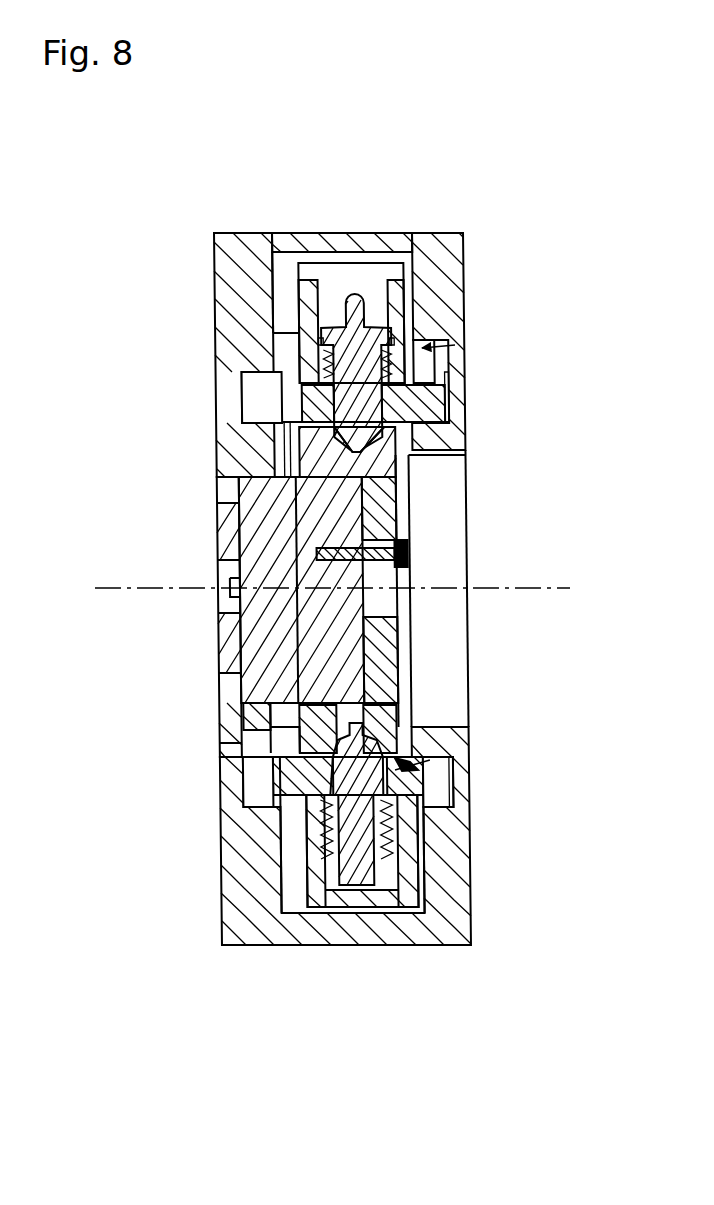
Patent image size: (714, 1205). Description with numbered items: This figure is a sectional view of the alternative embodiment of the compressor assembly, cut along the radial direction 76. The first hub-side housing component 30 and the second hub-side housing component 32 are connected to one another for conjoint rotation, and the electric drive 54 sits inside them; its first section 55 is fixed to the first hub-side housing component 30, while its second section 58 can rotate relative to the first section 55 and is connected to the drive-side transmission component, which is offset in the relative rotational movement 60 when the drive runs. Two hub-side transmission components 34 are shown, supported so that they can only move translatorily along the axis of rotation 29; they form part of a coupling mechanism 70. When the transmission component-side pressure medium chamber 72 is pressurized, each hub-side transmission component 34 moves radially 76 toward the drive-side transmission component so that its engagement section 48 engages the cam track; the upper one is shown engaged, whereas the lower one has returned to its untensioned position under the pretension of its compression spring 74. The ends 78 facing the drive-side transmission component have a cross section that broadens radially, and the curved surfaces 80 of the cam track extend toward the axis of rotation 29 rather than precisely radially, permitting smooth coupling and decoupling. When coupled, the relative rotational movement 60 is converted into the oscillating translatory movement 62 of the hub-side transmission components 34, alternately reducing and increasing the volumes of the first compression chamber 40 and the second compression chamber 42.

The axis of rotation 29 is at (500, 588).
The first hub-side housing component 30 is at (213, 330).
The second hub-side housing component 32 is at (452, 303).
The hub-side transmission component 34 is at (363, 405).
The first compression chamber 40 is at (455, 388).
The second compression chamber 42 is at (253, 368).
The engagement section 48 is at (360, 433).
The electric drive 54 is at (255, 628).
The first section 55 is at (255, 530).
The second section 58 is at (300, 613).
The relative rotational movement 60 is at (437, 560).
The oscillating translatory movement 62 is at (282, 853).
The coupling mechanism 70 is at (455, 345).
The transmission component-side pressure medium chamber 72 is at (333, 296).
The compression spring 74 is at (267, 380).
The radial direction 76 is at (353, 137).
The end 78 is at (353, 453).
The curved surface 80 is at (267, 712).